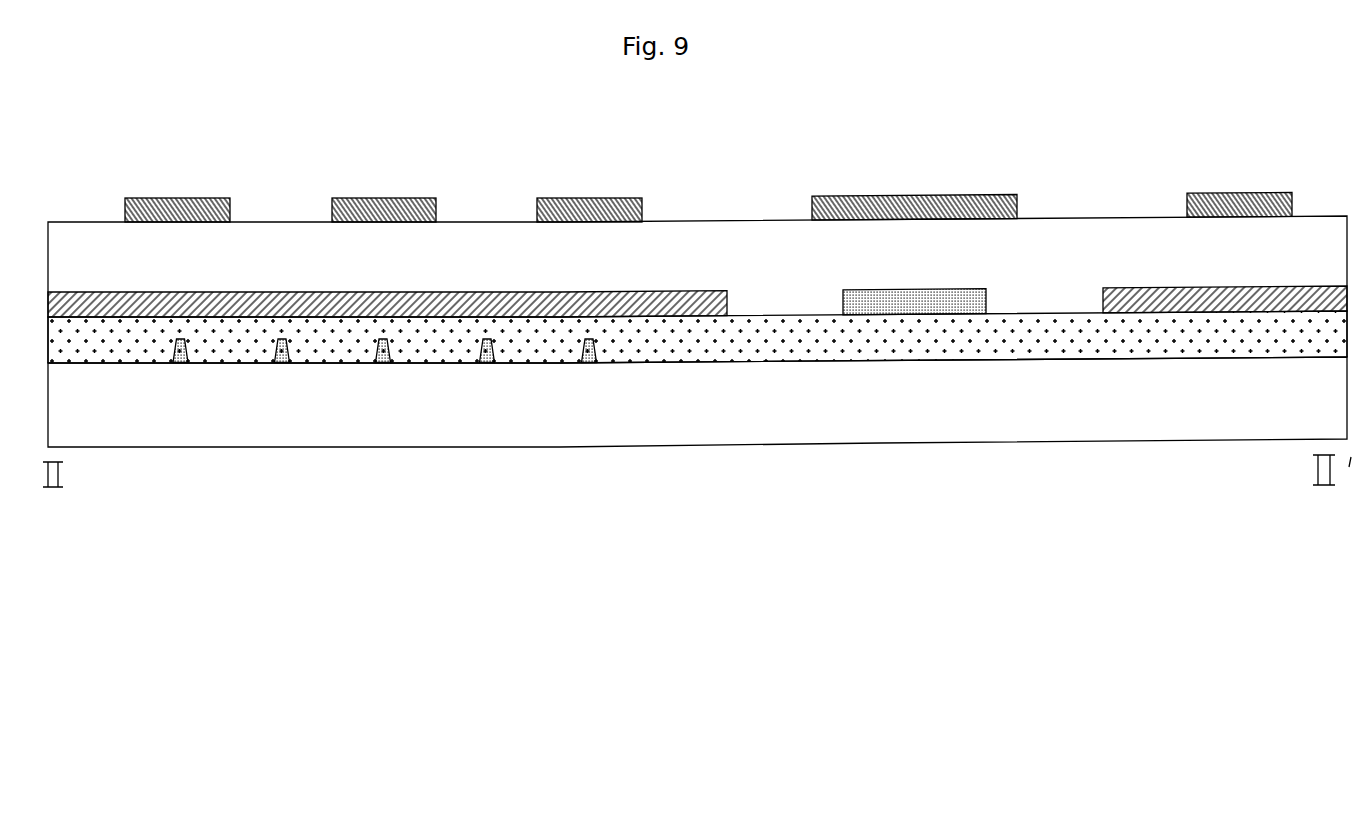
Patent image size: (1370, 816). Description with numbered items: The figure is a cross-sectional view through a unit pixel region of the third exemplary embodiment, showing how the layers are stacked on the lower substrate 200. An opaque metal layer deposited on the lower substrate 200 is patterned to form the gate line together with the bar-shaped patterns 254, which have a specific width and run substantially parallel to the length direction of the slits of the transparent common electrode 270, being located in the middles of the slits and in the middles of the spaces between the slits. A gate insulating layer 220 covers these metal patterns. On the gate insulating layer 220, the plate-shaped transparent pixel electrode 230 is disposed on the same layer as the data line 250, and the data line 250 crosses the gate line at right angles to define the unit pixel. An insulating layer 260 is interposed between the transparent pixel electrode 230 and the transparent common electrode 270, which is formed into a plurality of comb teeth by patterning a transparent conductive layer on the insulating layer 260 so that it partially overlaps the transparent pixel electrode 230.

The lower substrate 200 is at (673, 423).
The gate insulating layer 220 is at (1058, 342).
The transparent pixel electrode 230 is at (440, 300).
The data line 250 is at (920, 308).
The bar-shaped patterns 254 is at (282, 362).
The insulating layer 260 is at (1323, 228).
The transparent common electrode 270 is at (167, 197).